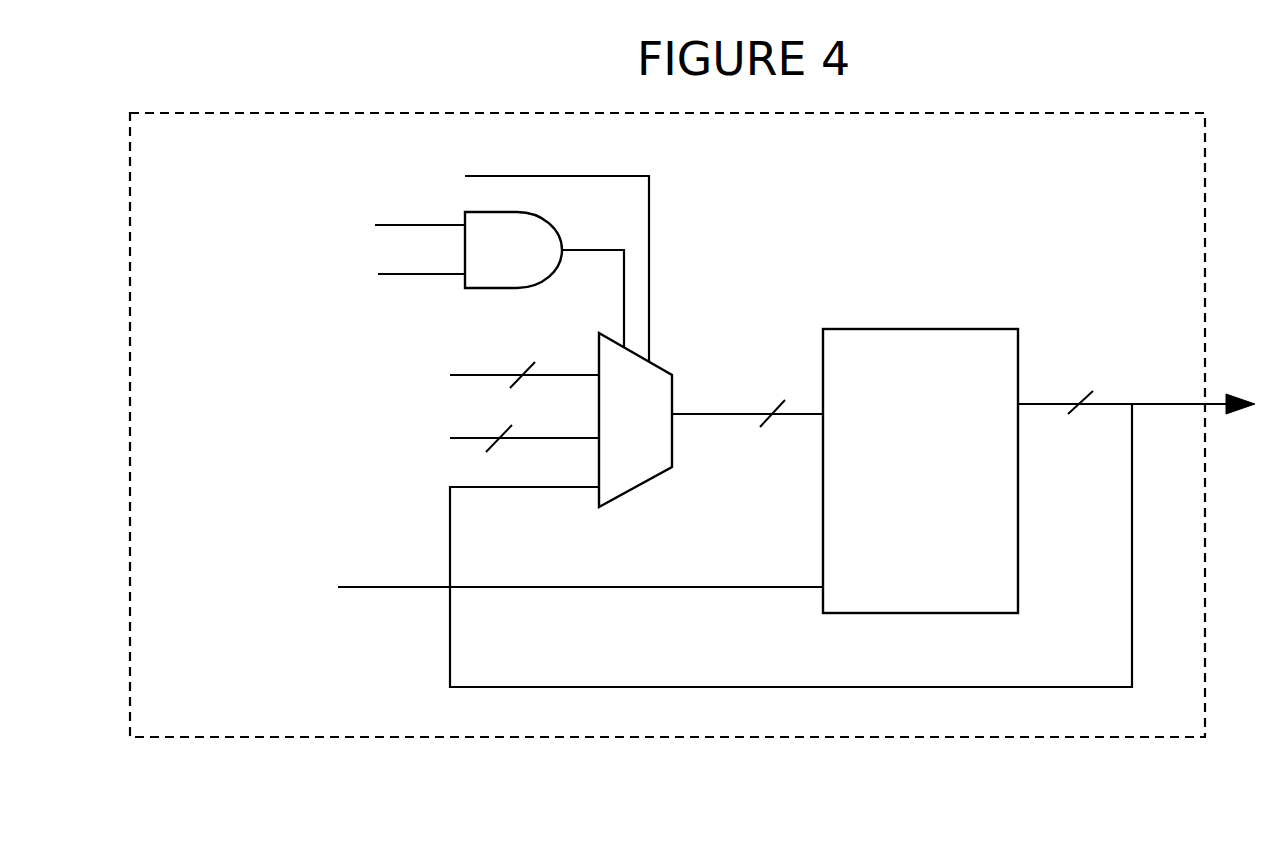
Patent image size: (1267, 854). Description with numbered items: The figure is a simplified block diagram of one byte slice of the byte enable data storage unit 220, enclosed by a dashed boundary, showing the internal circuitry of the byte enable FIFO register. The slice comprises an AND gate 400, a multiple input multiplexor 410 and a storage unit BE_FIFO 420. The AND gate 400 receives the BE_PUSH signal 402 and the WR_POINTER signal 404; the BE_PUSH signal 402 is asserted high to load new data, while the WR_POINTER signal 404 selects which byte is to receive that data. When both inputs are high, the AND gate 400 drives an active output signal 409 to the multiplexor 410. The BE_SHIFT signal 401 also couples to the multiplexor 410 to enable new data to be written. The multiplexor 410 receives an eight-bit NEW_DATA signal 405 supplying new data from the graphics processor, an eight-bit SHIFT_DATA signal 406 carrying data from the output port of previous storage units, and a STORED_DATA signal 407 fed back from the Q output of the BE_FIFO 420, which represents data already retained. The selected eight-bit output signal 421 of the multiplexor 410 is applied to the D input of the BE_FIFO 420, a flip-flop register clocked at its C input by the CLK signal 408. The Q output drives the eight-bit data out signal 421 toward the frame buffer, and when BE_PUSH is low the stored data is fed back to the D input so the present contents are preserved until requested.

The byte enable data storage unit 220 is at (1162, 258).
The AND gate 400 is at (517, 265).
The BE_SHIFT signal 401 is at (463, 256).
The BE_PUSH signal 402 is at (329, 225).
The WRITE_PTR signal 404 is at (306, 274).
The NEW_DATA signal 405 is at (414, 365).
The SHIFT_DATA signal 406 is at (406, 429).
The STORED_DATA signal 407 is at (791, 545).
The CLK 408 is at (512, 575).
The output signal 409 is at (575, 250).
The multiple input multiplexor 410 is at (652, 430).
The storage unit (BE_FIFO) 420 is at (975, 595).
The output signal / data out signal 421 is at (700, 413).